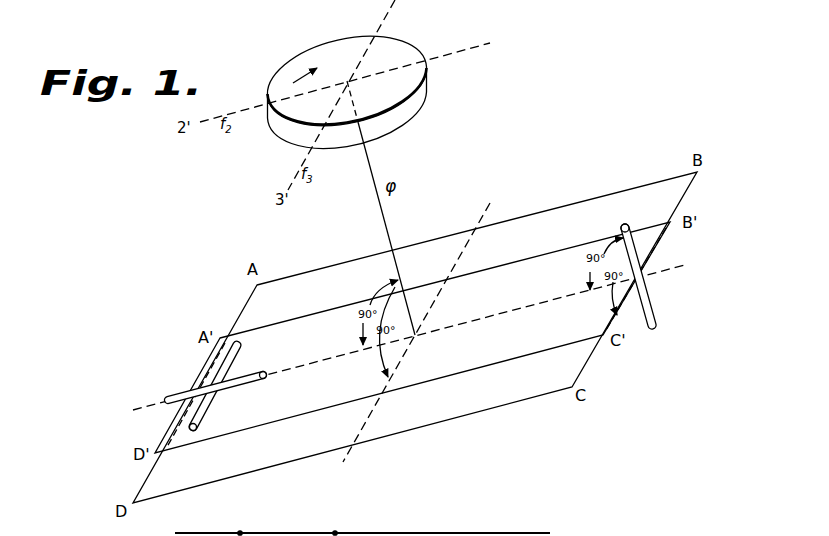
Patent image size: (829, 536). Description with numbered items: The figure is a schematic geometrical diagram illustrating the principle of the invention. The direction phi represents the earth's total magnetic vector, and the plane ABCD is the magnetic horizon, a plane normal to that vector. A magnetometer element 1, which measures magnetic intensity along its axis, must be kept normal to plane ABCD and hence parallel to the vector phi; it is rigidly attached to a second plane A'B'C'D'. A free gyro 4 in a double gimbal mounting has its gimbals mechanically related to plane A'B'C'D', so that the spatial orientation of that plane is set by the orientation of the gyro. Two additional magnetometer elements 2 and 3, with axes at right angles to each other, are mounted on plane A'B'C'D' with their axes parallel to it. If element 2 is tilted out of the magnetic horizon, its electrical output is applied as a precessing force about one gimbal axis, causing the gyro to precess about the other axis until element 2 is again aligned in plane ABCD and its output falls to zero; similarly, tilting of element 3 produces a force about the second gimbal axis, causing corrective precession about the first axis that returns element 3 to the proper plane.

The magnetometer element 1 is at (656, 320).
The magnetometer element 2 is at (205, 417).
The magnetometer element 3 is at (252, 373).
The free gyro 4 is at (402, 54).